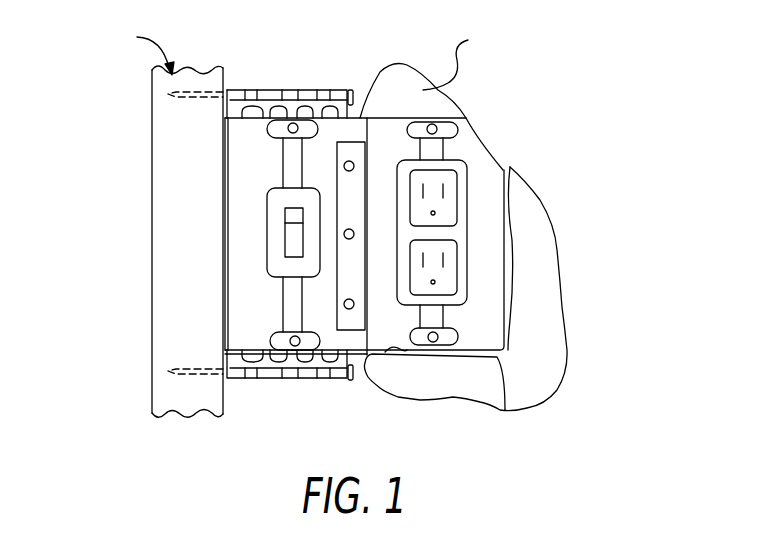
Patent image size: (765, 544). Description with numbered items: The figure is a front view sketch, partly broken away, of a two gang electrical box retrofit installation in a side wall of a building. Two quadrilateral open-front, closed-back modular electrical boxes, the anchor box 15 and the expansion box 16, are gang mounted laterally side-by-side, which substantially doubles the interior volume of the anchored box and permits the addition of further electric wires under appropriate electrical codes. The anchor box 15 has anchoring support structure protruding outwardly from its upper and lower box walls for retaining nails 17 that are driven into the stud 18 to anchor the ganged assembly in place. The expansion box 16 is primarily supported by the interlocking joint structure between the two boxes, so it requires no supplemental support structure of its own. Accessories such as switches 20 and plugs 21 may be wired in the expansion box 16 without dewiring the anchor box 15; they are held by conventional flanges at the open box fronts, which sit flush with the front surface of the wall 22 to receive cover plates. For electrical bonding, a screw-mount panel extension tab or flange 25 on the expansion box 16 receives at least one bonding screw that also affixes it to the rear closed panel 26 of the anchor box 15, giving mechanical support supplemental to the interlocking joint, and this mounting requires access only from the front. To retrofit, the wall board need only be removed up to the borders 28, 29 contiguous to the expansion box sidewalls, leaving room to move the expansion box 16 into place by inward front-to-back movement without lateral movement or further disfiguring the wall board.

The anchor box 15 is at (253, 110).
The expansion box 16 is at (505, 407).
The retaining nails 17 is at (258, 373).
The stud 18 is at (168, 315).
The switches 20 is at (283, 155).
The plugs 21 is at (450, 193).
The wall 22 is at (538, 266).
The screw-mount panel extension tab or flange 25 is at (352, 152).
The rear closed panel 26 is at (318, 148).
The border 28 is at (405, 350).
The border 29 is at (512, 307).